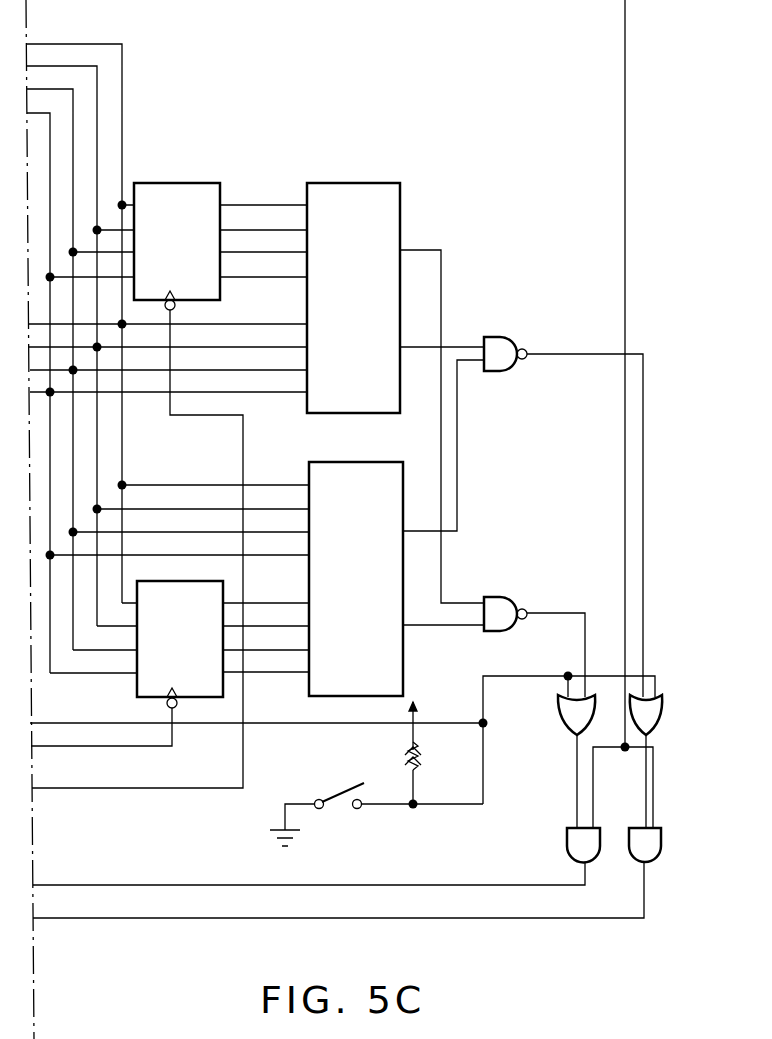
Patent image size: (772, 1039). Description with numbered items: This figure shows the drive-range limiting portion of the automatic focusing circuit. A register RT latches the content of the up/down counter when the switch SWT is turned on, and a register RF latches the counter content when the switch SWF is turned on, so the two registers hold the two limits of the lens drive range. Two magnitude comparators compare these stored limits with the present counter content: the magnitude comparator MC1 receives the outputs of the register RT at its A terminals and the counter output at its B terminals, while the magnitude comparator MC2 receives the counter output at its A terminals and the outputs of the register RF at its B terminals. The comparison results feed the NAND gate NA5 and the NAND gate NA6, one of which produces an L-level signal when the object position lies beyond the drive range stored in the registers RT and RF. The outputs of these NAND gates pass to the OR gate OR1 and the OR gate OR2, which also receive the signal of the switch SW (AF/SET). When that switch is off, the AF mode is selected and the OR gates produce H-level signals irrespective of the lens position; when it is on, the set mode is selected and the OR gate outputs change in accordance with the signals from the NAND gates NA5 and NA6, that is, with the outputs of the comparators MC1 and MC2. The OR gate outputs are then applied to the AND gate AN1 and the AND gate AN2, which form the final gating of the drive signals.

The register RT is at (186, 182).
The register RF is at (137, 693).
The magnitude comparator MC1 is at (358, 182).
The magnitude comparator MC2 is at (345, 461).
The NAND gate NA5 is at (501, 336).
The NAND gate NA6 is at (512, 596).
The OR gate OR1 is at (558, 722).
The OR gate OR2 is at (662, 722).
The AND gate AN1 is at (560, 842).
The AND gate AN2 is at (661, 833).
The switch SW AF/SET SW is at (342, 808).